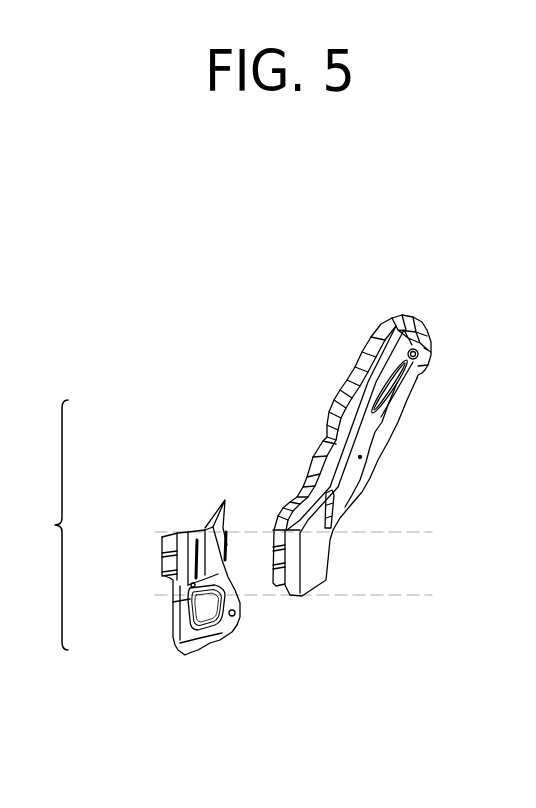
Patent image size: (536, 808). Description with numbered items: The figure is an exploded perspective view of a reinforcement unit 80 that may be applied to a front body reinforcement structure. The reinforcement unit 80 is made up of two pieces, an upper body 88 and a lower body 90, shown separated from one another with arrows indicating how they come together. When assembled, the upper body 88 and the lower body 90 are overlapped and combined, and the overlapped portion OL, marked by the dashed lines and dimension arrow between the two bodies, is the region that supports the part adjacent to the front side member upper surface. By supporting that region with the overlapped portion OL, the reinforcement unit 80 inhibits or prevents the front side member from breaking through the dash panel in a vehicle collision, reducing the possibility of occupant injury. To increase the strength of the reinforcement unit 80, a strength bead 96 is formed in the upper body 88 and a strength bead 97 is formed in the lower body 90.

The reinforcement unit 80 is at (47, 525).
The upper body 88 is at (280, 466).
The lower body 90 is at (146, 613).
The strength bead 96 is at (333, 506).
The strength bead 97 is at (197, 567).
The overlapped portion OL is at (421, 545).